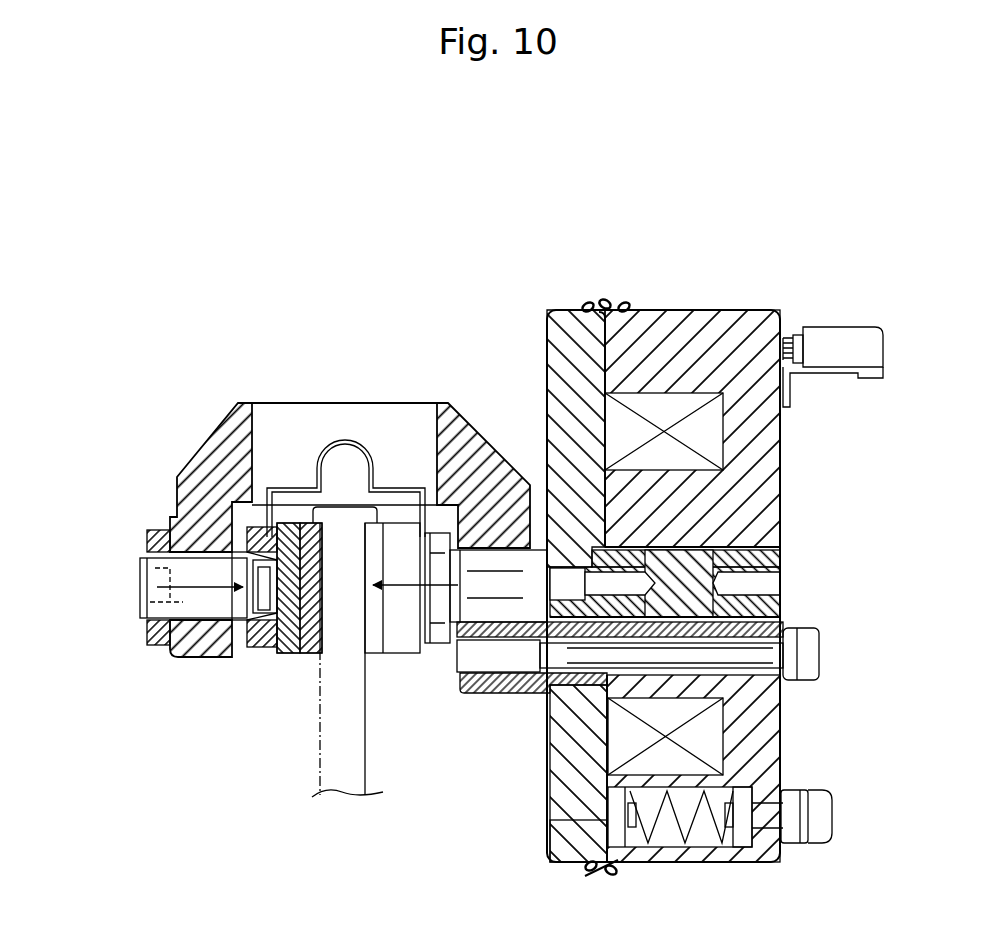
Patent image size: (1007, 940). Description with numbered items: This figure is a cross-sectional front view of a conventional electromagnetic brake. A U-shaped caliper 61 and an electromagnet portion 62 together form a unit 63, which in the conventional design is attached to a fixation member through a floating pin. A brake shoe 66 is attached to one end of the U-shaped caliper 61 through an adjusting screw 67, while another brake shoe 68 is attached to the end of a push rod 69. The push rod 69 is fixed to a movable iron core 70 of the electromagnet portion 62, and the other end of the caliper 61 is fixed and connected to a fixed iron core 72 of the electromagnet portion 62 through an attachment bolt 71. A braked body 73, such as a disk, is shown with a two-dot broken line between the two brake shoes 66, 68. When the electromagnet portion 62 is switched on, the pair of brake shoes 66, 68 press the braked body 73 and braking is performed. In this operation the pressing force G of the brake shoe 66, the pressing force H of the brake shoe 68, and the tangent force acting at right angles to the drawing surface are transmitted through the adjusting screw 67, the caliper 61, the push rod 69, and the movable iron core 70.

The U-shaped caliper 61 is at (367, 398).
The electromagnet portion 62 is at (669, 300).
The unit 63 is at (426, 236).
The brake shoe 66 is at (297, 658).
The adjusting screw 67 is at (146, 594).
The brake shoe 68 is at (403, 658).
The push rod 69 is at (514, 575).
The movable iron core 70 is at (562, 861).
The attachment bolt 71 is at (766, 656).
The fixed iron core 72 is at (739, 305).
The braked body 73 is at (318, 741).